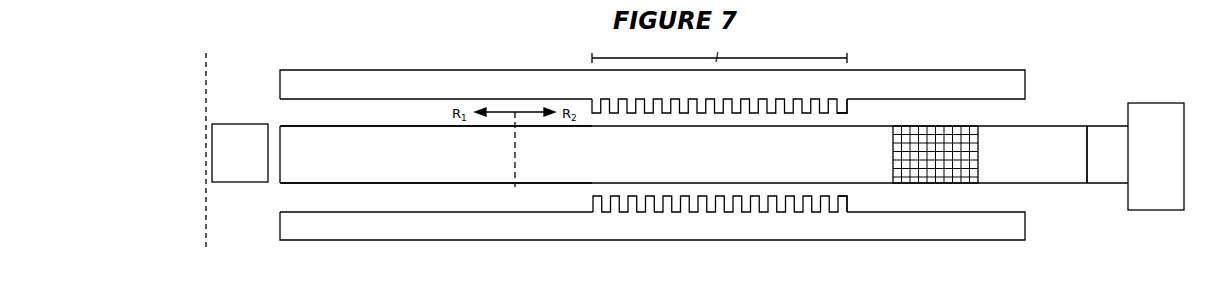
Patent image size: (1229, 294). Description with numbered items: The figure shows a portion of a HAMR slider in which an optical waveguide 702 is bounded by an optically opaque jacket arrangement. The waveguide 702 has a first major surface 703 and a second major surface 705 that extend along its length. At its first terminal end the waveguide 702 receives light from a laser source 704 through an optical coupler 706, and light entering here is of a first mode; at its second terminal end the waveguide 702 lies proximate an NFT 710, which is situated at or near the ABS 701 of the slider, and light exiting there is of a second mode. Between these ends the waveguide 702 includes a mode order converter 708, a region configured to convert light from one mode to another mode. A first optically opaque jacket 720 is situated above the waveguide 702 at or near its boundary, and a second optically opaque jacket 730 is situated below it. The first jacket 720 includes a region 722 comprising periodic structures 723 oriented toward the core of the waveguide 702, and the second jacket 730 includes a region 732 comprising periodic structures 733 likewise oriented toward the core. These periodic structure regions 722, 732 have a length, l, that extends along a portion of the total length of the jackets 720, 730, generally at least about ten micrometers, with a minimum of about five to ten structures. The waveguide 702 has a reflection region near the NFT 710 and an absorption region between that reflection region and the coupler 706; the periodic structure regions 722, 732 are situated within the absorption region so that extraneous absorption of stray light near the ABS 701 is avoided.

The ABS 701 is at (206, 72).
The waveguide 702 is at (683, 158).
The first major surface 703 is at (390, 125).
The laser source 704 is at (1155, 103).
The second major surface 705 is at (390, 184).
The optical coupler 706 is at (1100, 137).
The mode order converter 708 is at (952, 138).
The NFT 710 is at (243, 183).
The first optically opaque jacket 720 is at (965, 82).
The region comprising periodic structures 722 is at (757, 92).
The periodic structures 723 is at (849, 108).
The second optically opaque jacket 730 is at (963, 224).
The region comprising periodic structures 732 is at (755, 218).
The periodic structures 733 is at (848, 204).